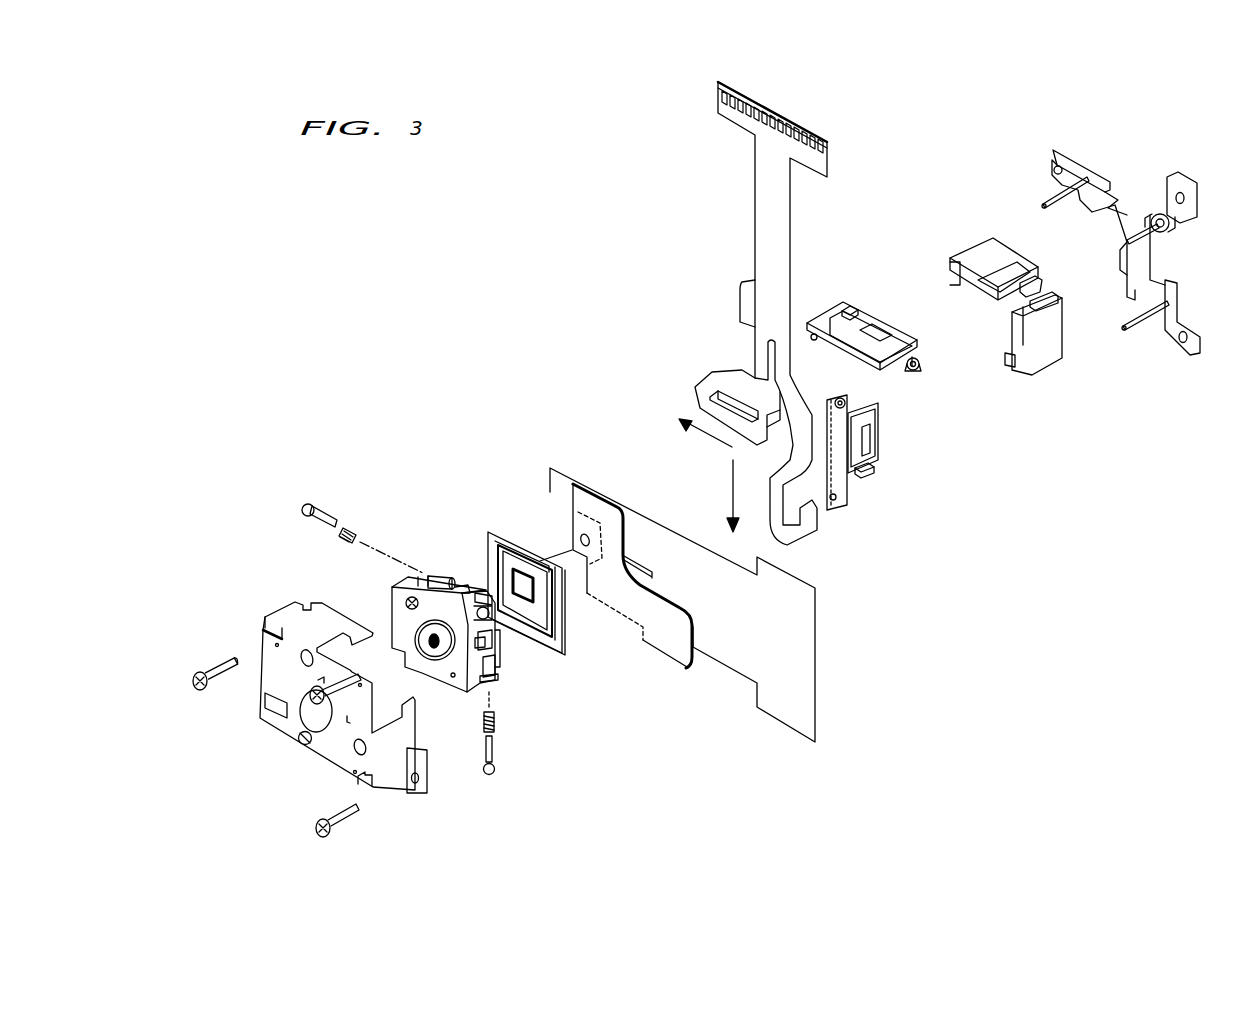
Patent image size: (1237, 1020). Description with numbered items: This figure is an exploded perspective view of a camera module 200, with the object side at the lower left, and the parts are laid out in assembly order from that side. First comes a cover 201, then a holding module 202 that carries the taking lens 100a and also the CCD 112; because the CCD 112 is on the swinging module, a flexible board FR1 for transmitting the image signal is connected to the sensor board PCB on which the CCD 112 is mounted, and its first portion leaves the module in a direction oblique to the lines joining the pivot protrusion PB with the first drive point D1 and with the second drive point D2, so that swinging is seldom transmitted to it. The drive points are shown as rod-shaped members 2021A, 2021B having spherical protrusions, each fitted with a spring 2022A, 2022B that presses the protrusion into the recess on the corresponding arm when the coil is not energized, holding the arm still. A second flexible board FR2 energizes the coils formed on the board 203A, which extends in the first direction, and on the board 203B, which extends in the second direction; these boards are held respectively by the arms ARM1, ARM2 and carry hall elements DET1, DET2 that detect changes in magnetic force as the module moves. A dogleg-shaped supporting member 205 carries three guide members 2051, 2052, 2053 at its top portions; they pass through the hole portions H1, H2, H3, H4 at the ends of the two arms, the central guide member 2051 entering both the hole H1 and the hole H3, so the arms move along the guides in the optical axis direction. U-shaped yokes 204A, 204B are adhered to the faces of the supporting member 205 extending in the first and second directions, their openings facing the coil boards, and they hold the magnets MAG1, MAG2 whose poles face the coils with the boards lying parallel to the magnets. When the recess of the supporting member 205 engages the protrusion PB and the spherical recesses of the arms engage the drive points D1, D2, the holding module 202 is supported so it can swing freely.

The camera module 200 is at (637, 134).
The flexible board FR2 is at (758, 237).
The flexible board FR1 is at (800, 635).
The sensor board PCB is at (488, 545).
The CCD 112 is at (527, 590).
The taking lens 100a is at (443, 660).
The protrusion PB is at (493, 620).
The holding module 202 is at (472, 660).
The spring 2022A is at (498, 718).
The rod-shaped member 2021A is at (496, 750).
The first drive point D1 is at (490, 774).
The second drive point D2 is at (305, 505).
The rod-shaped member 2021B is at (332, 510).
The spring 2022B is at (352, 527).
The cover 201 is at (325, 765).
The arm ARM2 is at (822, 318).
The hole portion H4 is at (816, 342).
The hole portion H3 is at (912, 372).
The hall element DET2 is at (852, 306).
The board 203B is at (900, 338).
The arm ARM1 is at (858, 500).
The hole portion H2 is at (848, 402).
The hole portion H1 is at (838, 500).
The board 203A is at (876, 438).
The hall element DET1 is at (870, 472).
The U-shaped yoke 204B is at (970, 262).
The magnet MAG2 is at (1032, 288).
The magnet MAG1 is at (1050, 305).
The U-shaped yoke 204A is at (1048, 360).
The supporting member 205 is at (1112, 188).
The guide member 2053 is at (1050, 195).
The guide member 2051 is at (1155, 238).
The guide member 2052 is at (1135, 336).